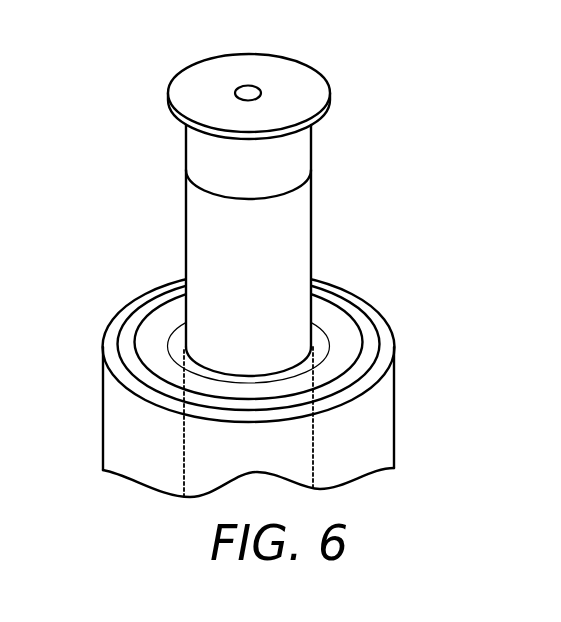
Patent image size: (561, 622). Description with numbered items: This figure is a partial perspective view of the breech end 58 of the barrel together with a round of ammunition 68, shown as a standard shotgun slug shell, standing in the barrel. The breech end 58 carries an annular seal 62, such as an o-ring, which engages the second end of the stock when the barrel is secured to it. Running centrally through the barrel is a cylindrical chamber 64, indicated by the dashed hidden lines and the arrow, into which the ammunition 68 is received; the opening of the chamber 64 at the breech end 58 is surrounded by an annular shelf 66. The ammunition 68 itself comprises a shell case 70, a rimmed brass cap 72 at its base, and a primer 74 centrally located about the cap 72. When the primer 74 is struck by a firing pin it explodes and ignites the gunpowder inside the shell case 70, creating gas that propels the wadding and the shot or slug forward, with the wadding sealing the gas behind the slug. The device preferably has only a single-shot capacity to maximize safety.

The breech end 58 is at (393, 343).
The annular seal 62 is at (108, 350).
The chamber 64 is at (307, 455).
The annular shelf 66 is at (320, 342).
The ammunition 68 is at (268, 230).
The shell case 70 is at (187, 212).
The rimmed brass cap 72 is at (193, 147).
The primer 74 is at (250, 90).